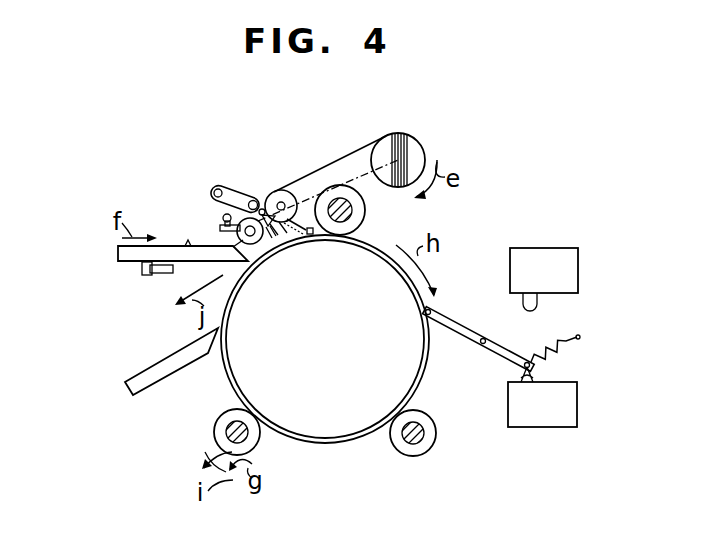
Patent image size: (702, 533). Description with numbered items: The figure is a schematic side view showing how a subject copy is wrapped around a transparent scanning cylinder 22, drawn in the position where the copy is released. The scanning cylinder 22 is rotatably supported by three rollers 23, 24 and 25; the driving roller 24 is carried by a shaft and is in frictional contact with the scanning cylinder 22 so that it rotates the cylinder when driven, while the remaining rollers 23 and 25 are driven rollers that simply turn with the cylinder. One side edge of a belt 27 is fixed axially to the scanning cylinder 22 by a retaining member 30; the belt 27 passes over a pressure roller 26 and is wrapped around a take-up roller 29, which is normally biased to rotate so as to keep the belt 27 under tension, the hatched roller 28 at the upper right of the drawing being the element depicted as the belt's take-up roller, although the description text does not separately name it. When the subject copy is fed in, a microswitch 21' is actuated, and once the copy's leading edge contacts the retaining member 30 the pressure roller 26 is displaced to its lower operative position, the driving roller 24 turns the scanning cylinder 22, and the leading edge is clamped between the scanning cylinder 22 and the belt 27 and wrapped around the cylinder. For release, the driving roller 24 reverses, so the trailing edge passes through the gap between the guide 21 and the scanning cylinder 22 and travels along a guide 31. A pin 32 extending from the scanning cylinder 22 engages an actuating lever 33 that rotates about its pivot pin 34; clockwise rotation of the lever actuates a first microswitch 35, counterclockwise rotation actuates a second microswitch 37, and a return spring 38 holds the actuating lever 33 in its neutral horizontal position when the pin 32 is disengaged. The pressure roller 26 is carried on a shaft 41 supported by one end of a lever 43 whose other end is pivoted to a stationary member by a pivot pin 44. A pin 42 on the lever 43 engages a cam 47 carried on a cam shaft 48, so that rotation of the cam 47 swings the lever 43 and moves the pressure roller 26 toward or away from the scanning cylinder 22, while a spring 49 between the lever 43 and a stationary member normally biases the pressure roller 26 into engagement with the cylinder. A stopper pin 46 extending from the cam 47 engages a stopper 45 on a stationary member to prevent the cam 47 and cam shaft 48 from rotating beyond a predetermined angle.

The guide 21 is at (160, 267).
The microswitch 21' is at (147, 293).
The scanning cylinder 22 is at (347, 438).
The driven roller 23 is at (366, 210).
The driving roller 24 is at (248, 448).
The driven roller 25 is at (437, 435).
The pressure roller 26 is at (292, 180).
The belt 27 is at (350, 150).
The take-up roller 28 is at (417, 148).
The take-up roller 29 is at (228, 428).
The retaining member 30 is at (306, 236).
The guide 31 is at (155, 368).
The pin 32 is at (430, 320).
The actuating lever 33 is at (460, 322).
The pivot pin 34 is at (483, 344).
The first microswitch 35 is at (578, 403).
The second microswitch 37 is at (578, 266).
The return spring 38 is at (543, 345).
The shaft 41 is at (275, 190).
The pin 42 is at (254, 200).
The lever 43 is at (235, 196).
The pivot pin 44 is at (216, 189).
The stopper 45 is at (223, 215).
The stopper pin 46 is at (220, 228).
The cam 47 is at (226, 256).
The cam shaft 48 is at (258, 245).
The spring 49 is at (285, 232).